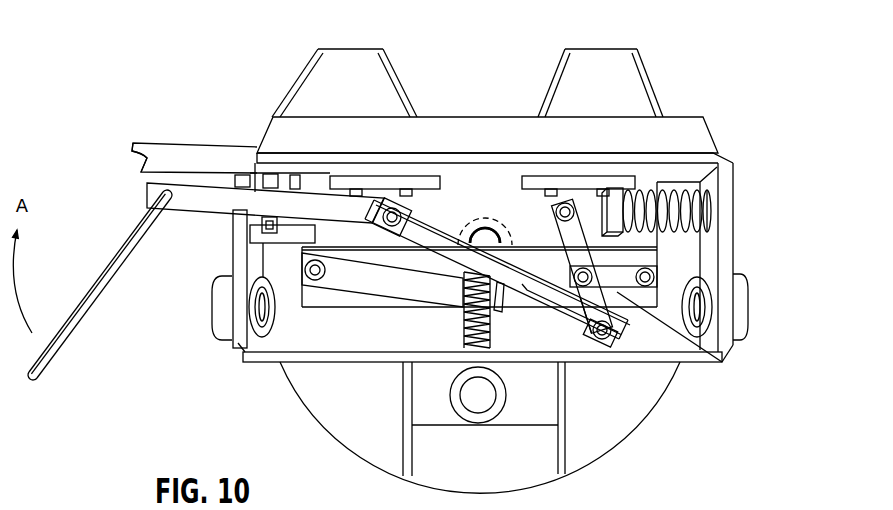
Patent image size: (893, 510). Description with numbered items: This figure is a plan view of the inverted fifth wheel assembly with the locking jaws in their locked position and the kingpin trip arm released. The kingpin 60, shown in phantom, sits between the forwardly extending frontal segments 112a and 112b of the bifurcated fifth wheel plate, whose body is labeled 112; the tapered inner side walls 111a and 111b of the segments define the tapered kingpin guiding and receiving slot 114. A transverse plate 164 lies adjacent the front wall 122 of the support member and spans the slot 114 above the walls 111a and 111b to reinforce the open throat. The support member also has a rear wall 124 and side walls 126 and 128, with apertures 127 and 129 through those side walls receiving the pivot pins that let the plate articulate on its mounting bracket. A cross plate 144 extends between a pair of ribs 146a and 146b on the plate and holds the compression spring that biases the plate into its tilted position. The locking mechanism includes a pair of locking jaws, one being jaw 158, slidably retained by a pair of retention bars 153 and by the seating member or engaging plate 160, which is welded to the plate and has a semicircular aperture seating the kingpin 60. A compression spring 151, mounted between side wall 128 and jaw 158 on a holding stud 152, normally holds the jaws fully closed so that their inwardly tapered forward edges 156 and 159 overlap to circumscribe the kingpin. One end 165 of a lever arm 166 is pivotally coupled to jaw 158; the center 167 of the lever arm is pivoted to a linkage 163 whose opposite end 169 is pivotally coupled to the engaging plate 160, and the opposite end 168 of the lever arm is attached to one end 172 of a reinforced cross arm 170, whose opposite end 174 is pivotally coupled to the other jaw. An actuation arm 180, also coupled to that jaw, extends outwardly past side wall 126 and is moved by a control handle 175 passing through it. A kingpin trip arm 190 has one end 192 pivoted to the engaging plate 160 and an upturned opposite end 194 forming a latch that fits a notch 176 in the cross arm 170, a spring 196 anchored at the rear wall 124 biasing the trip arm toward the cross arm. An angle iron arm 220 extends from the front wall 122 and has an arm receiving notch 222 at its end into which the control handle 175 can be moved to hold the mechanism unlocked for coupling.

The kingpin 60 is at (468, 215).
The tapered inner side wall 111a is at (555, 75).
The tapered inner side wall 111b is at (388, 82).
The drum / hopper body 112 is at (480, 427).
The frontal segment 112a is at (594, 65).
The frontal segment 112b is at (364, 66).
The kingpin guiding and receiving slot 114 is at (467, 65).
The front wall 122 is at (318, 153).
The rear wall 124 is at (310, 360).
The side wall 126 is at (233, 250).
The aperture 127 is at (745, 302).
The side wall 128 is at (735, 204).
The aperture 129 is at (219, 307).
The cross plate 144 is at (457, 425).
The rib 146a is at (400, 437).
The rib 146b is at (563, 453).
The compression spring 151 is at (700, 192).
The holding stud 152 is at (617, 200).
The retention bars 153 is at (378, 177).
The forward edge 156 is at (481, 213).
The locking jaw 158 is at (645, 240).
The forward edge 159 is at (490, 213).
The seating member 160 is at (393, 308).
The linkage 163 is at (714, 362).
The transverse plate 164 is at (695, 133).
The end of lever arm 165 is at (572, 203).
The lever arm 166 is at (635, 383).
The center of lever arm 167 is at (562, 268).
The opposite end of lever arm 168 is at (606, 340).
The end of linkage 169 is at (652, 276).
The reinforced cross arm 170 is at (484, 256).
The end of cross arm 172 is at (582, 322).
The opposite end of cross arm 174 is at (400, 230).
The control handle 175 is at (50, 367).
The notch 176 is at (530, 292).
The actuation arm 180 is at (194, 218).
The kingpin trip arm 190 is at (358, 292).
The end of trip arm 192 is at (313, 281).
The latch end of trip arm 194 is at (498, 300).
The spring 196 is at (463, 315).
The angle iron arm 220 is at (160, 134).
The arm receiving notch 222 is at (140, 160).